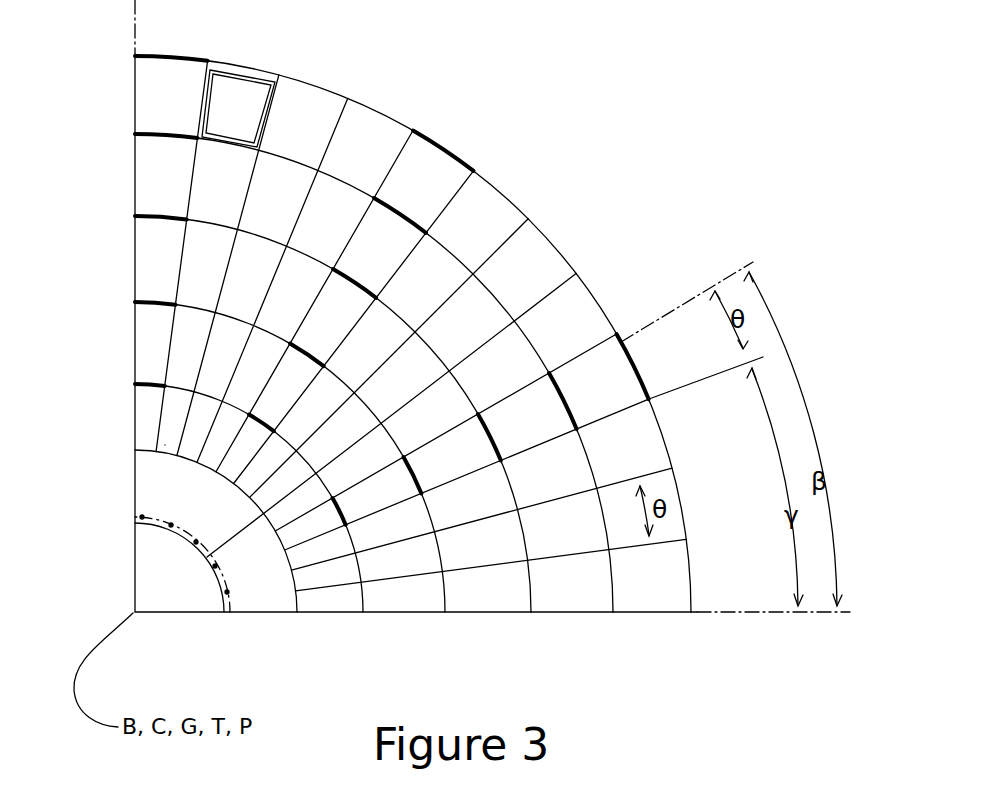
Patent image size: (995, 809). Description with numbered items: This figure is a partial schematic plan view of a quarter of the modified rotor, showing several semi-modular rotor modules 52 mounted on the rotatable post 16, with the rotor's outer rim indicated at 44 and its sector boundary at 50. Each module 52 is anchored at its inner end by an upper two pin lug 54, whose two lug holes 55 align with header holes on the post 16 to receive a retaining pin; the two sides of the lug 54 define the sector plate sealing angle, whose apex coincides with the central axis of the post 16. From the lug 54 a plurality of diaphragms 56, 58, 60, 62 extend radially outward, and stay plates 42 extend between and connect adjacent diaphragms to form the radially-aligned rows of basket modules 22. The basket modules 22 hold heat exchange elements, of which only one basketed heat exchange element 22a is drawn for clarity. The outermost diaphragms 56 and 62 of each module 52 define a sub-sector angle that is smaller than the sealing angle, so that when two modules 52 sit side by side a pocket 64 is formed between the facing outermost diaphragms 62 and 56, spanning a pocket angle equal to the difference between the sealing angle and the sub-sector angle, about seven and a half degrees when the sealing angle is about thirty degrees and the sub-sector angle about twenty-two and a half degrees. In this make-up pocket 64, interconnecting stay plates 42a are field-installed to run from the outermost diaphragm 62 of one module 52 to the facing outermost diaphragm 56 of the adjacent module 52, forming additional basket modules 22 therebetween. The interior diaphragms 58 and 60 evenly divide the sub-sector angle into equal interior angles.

The rotatable post 16 is at (190, 613).
The basket module 22 is at (175, 140).
The basketed heat exchange element 22a is at (228, 95).
The stay plate 42 is at (348, 613).
The interconnecting stay plate 42a is at (145, 135).
The outer boundary 44 is at (697, 578).
The arc 50 is at (530, 313).
The semi-modular rotor module 52 is at (328, 53).
The upper two pin lug 54 is at (163, 497).
The lug hole 55 is at (147, 525).
The outermost diaphragm 56 is at (134, 70).
The interior diaphragm 58 is at (505, 613).
The interior diaphragm 60 is at (565, 613).
The outermost diaphragm 62 is at (445, 220).
The pocket 64 is at (172, 54).